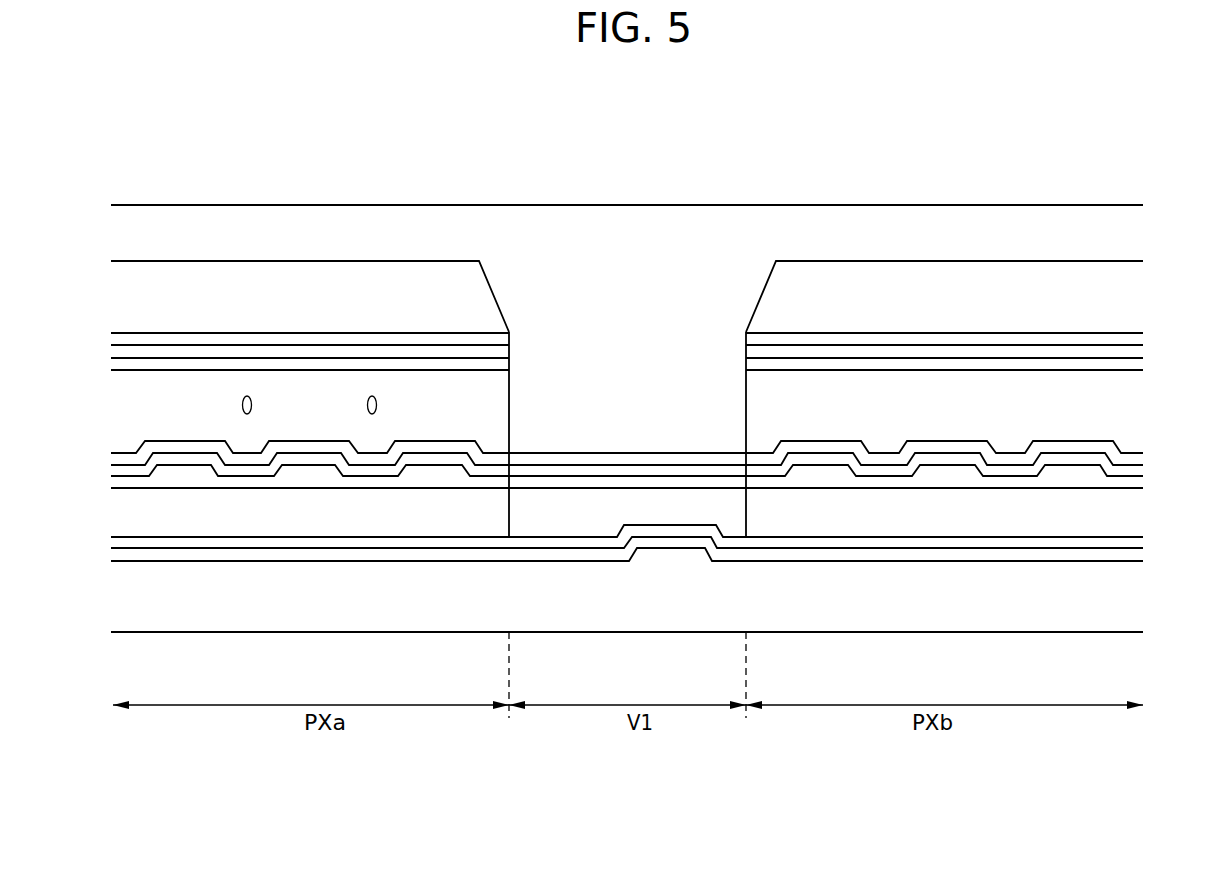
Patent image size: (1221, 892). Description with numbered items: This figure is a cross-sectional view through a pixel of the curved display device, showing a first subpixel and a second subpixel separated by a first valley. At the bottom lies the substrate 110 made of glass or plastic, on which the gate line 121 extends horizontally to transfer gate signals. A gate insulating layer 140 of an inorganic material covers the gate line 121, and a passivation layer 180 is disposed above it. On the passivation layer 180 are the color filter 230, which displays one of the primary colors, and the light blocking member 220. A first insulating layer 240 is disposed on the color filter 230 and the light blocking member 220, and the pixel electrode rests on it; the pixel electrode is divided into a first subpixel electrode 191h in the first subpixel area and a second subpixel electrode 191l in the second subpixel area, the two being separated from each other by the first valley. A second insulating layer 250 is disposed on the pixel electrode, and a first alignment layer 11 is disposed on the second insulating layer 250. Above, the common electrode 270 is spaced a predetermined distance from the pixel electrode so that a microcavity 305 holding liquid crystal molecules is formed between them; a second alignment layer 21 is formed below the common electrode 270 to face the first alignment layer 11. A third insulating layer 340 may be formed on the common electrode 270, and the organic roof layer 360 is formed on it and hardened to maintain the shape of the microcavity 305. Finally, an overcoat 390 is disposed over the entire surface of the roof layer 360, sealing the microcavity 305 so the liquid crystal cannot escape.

The overcoat 390 is at (463, 225).
The roof layer 360 is at (1137, 285).
The third insulating layer 340 is at (1140, 337).
The common electrode 270 is at (1137, 352).
The second alignment layer 21 is at (1140, 364).
The microcavity 305 is at (1096, 402).
The light blocking member 220 is at (562, 517).
The first alignment layer 11 is at (1010, 460).
The second insulating layer 250 is at (888, 472).
The first subpixel electrode 191h is at (182, 472).
The first insulating layer 240 is at (793, 483).
The second subpixel electrode 191l is at (1075, 473).
The color filter 230 is at (273, 515).
The passivation layer 180 is at (438, 543).
The gate insulating layer 140 is at (358, 553).
The gate line 121 is at (678, 553).
The substrate 110 is at (1137, 599).